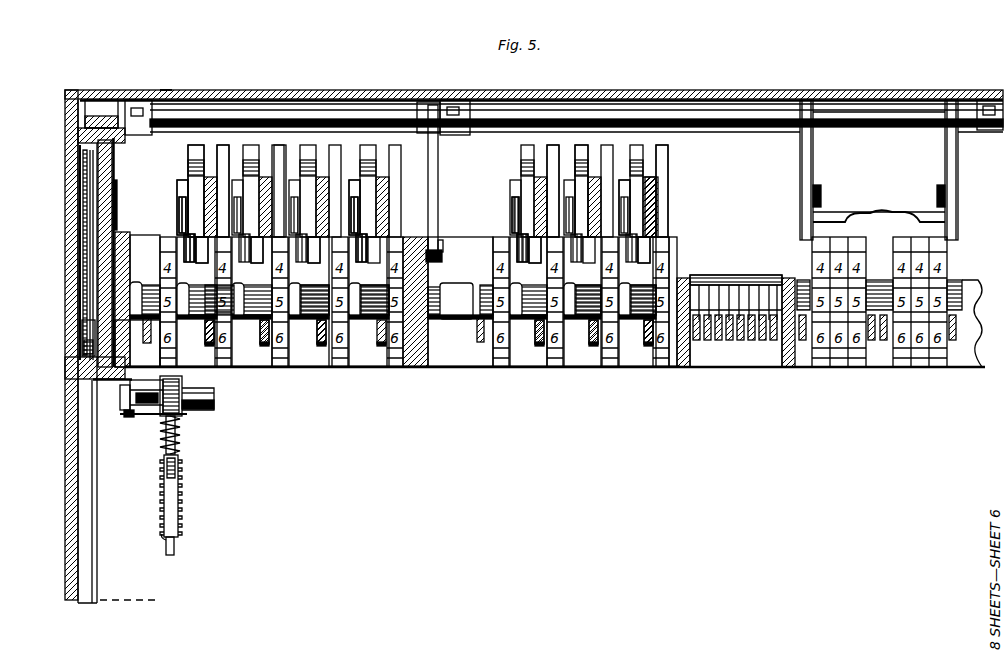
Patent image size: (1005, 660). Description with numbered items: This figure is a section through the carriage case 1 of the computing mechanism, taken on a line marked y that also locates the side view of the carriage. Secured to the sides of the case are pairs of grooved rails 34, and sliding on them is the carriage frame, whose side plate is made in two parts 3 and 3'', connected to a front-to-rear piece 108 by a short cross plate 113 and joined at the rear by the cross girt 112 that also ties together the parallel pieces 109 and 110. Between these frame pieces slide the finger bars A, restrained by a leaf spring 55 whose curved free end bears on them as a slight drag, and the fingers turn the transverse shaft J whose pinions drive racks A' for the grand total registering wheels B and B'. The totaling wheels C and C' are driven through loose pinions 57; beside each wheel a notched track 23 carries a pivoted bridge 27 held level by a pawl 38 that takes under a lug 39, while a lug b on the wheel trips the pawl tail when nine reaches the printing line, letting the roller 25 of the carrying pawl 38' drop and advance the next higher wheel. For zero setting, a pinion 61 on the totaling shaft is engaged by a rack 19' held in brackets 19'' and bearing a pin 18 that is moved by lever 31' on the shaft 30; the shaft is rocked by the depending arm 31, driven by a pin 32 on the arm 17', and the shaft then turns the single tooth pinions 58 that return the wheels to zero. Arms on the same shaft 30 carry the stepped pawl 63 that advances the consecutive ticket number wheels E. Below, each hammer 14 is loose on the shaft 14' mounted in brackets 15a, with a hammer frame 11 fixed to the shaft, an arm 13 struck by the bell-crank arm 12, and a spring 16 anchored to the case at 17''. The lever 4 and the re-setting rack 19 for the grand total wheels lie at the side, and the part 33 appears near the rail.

The carriage case 1 is at (690, 92).
The section line y— y is at (165, 90).
The grooved rails 34 is at (80, 135).
The depending arm 31 is at (58, 252).
The re-setting rack 19 is at (75, 252).
The arm 17' is at (64, 255).
The pin 32 is at (86, 300).
The block 33 is at (86, 337).
The lever 4 is at (80, 427).
The shaft 30 is at (172, 126).
The pawl 63 is at (880, 208).
The brackets 19'' is at (131, 288).
The side plate part 3'' is at (126, 205).
The pinion 61 is at (140, 285).
The side plate part 3 is at (137, 343).
The registering wheels B is at (194, 256).
The registering wheel B' is at (249, 256).
The parallel frame piece 108 is at (412, 367).
The short cross plate 113 is at (310, 367).
The lever 31' is at (446, 180).
The pin 18 is at (443, 262).
The rack 19' is at (454, 240).
The totaling wheel C is at (526, 269).
The totaling wheel C' is at (580, 268).
The parallel frame piece 109 is at (688, 368).
The parallel frame piece 110 is at (790, 368).
The rear cross girt 112 is at (752, 368).
The leaf spring 55 is at (735, 278).
The fingers or bars A is at (735, 337).
The consecutive number wheels E is at (920, 368).
The racks A' is at (233, 339).
The antifriction roller 25 is at (190, 158).
The track 23 is at (186, 187).
The lug 39 is at (178, 195).
The pawl 38 is at (344, 229).
The carrying pawl 38' is at (460, 180).
The bridge 27 is at (673, 162).
The lug b is at (421, 260).
The single tooth pinion 58 is at (205, 285).
The pinion 57 is at (483, 290).
The shaft J is at (151, 396).
The hammer 14 is at (215, 395).
The shaft 14' is at (220, 409).
The hammer frame 11 is at (190, 416).
The brackets 15a is at (128, 420).
The arm 13 is at (180, 436).
The spring 16 is at (160, 447).
The bell-crank lever arm 12 is at (182, 482).
The spring anchorage 17'' is at (193, 544).